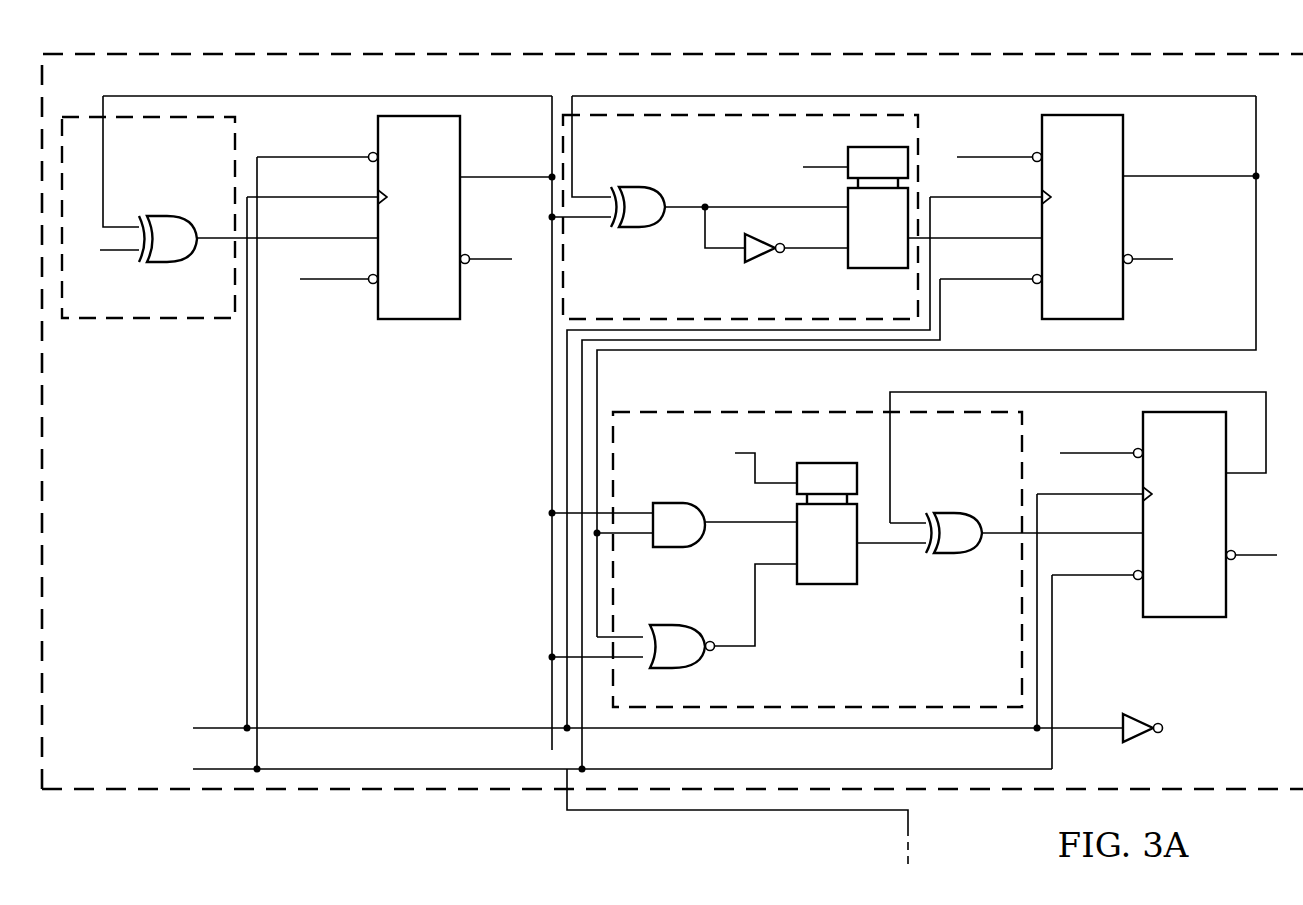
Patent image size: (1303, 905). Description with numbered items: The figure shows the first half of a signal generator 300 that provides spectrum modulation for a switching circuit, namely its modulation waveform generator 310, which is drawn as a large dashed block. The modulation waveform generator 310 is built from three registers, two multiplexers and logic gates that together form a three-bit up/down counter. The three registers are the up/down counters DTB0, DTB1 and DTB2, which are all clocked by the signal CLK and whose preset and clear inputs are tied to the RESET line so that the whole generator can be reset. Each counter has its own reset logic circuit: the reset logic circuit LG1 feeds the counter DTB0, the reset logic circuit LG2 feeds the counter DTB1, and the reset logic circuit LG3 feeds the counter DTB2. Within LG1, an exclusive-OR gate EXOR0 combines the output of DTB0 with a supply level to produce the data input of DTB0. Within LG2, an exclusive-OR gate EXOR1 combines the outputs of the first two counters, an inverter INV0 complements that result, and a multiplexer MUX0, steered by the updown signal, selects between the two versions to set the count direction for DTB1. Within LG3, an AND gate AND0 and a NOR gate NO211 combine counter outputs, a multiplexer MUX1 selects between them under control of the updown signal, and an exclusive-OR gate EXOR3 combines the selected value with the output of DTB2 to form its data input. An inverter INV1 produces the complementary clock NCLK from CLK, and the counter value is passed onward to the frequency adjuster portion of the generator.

The signal generator 300 is at (672, 474).
The modulation waveform generator 310 is at (124, 568).
The reset logic circuit LG1 is at (307, 194).
The reset logic circuit LG2 is at (904, 194).
The reset logic circuit LG3 is at (909, 535).
The up/down counter DTB0 is at (401, 442).
The up/down counter DTB1 is at (912, 434).
The up/down counter DTB2 is at (1169, 590).
The exclusive-OR gate EXOR0 is at (167, 247).
The exclusive-OR gate EXOR1 is at (635, 217).
The exclusive-OR gate EXOR3 is at (952, 542).
The inverter INV0 is at (763, 257).
The inverter INV1 is at (1142, 734).
The multiplexer MUX0 is at (867, 219).
The multiplexer MUX1 is at (816, 536).
The AND gate AND0 is at (675, 534).
The NOR gate NO211 is at (680, 656).